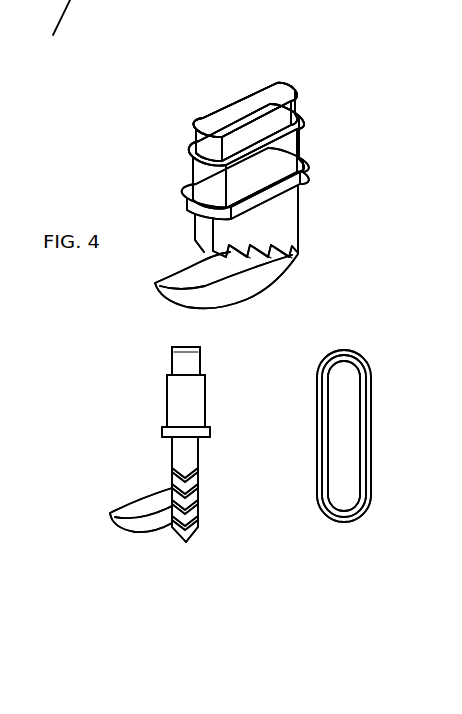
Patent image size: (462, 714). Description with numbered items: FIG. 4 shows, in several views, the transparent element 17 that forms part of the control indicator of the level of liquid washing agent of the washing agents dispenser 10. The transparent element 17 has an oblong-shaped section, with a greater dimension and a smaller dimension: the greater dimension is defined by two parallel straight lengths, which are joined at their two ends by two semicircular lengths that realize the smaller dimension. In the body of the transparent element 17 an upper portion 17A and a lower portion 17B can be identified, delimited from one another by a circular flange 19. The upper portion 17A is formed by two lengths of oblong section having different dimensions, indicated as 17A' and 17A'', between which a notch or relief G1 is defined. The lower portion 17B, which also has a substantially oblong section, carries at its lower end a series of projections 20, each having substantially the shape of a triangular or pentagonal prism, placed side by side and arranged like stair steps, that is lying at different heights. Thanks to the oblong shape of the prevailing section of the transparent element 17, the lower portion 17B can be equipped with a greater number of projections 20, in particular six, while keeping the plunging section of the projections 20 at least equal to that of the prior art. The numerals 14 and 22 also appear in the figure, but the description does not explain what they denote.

The washing agents dispenser 10 is at (360, 105).
The handle 14 is at (57, 33).
The transparent element 17 is at (124, 382).
The upper portion 17A is at (229, 271).
The first length of oblong section 17A' is at (210, 229).
The second length of oblong section 17A'' is at (203, 265).
The lower portion 17B is at (318, 222).
The circular flange 19 is at (187, 208).
The projections 20 is at (160, 287).
The top surface 22 is at (245, 107).
The notch or relief G1 is at (330, 407).